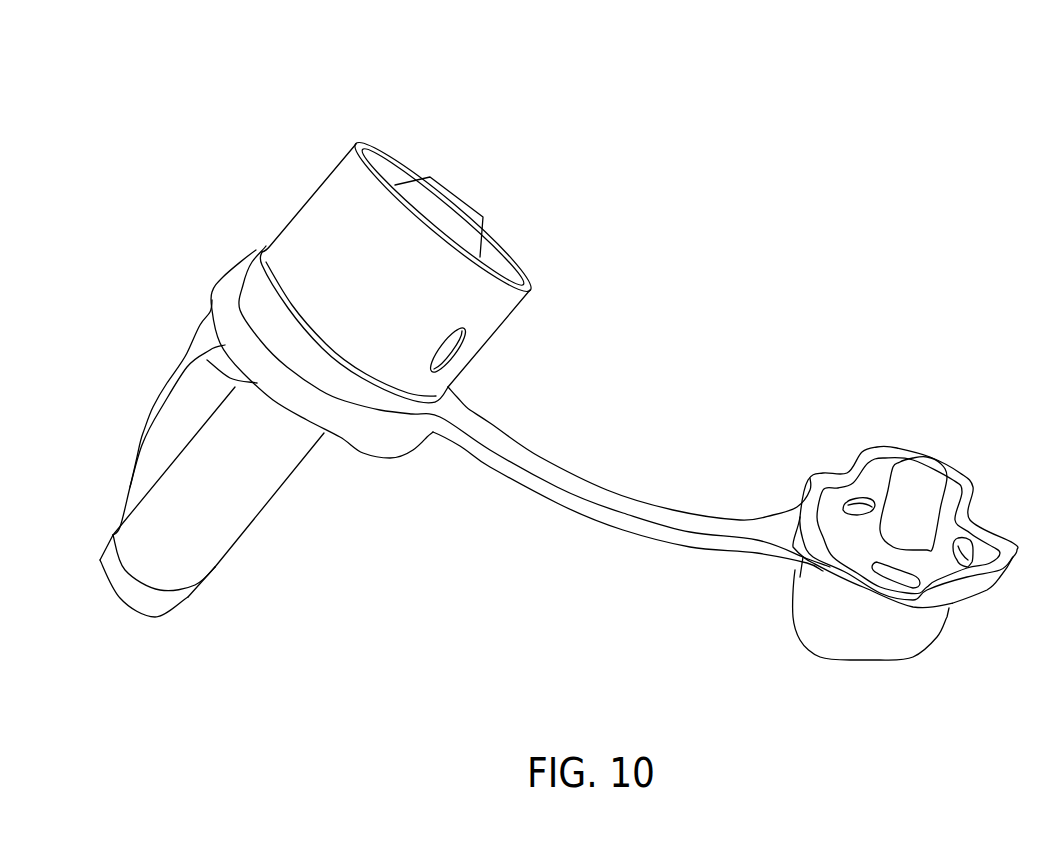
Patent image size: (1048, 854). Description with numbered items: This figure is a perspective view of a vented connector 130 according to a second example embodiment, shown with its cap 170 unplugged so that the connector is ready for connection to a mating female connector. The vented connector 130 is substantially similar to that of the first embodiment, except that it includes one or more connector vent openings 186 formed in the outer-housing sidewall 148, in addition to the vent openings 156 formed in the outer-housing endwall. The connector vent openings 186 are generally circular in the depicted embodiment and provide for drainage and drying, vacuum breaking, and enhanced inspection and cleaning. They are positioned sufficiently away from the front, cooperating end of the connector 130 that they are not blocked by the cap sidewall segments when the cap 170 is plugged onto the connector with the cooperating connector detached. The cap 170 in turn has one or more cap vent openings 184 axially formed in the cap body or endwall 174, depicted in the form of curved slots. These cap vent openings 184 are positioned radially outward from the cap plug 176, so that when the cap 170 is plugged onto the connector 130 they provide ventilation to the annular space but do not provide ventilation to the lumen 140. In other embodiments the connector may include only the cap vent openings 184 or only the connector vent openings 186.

The vented connector 130 is at (308, 550).
The lumen 140 is at (472, 187).
The outer-housing sidewall 148 is at (385, 252).
The vent openings 156 is at (352, 457).
The cap 170 is at (900, 525).
The cap body or endwall 174 is at (870, 615).
The cap plug 176 is at (898, 460).
The cap vent openings 184 is at (972, 540).
The connector vent openings 186 is at (450, 351).